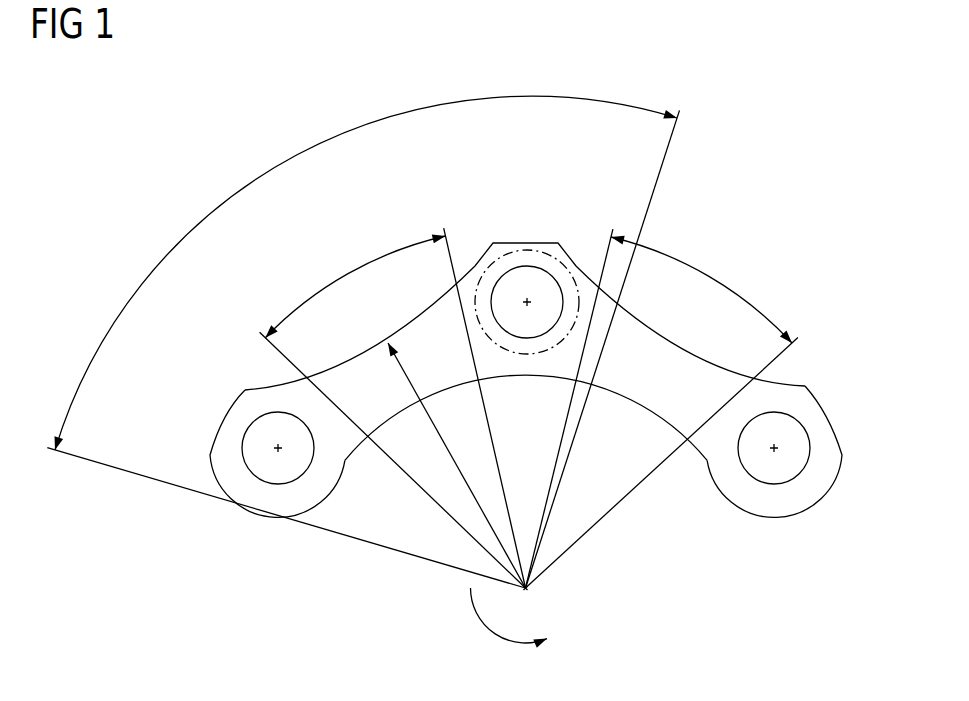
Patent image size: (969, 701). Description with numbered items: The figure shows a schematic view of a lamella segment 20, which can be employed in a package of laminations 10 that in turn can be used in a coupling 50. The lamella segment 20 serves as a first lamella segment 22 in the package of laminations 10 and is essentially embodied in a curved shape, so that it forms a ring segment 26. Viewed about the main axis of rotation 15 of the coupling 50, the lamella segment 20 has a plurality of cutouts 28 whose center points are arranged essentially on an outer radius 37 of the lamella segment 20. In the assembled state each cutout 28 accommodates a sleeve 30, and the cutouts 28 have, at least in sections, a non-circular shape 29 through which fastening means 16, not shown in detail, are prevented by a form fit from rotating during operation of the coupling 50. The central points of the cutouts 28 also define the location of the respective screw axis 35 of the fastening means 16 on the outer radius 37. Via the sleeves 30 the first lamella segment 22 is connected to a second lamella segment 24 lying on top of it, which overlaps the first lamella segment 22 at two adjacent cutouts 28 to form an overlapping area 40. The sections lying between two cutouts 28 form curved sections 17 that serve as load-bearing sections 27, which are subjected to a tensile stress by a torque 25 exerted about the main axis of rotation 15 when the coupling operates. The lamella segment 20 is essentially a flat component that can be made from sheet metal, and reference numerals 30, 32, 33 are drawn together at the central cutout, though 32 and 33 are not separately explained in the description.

The package of laminations 10 is at (465, 387).
The main axis of rotation 15 is at (527, 592).
The fastening means 16 is at (465, 376).
The curved sections 17 is at (529, 399).
The lamella segment 20 is at (363, 342).
The first lamella segment 22 is at (227, 423).
The second lamella segment 24 is at (363, 342).
The torque 25 is at (484, 624).
The ring segment 26 is at (830, 424).
The load-bearing sections 27 is at (743, 236).
The cutouts 28 is at (434, 303).
The non-circular shape 29 is at (557, 283).
The sleeve 30 is at (465, 372).
The chamfer 32 is at (494, 259).
The countersink 33 is at (494, 259).
The screw axis 35 is at (528, 302).
The outer radius 37 is at (414, 395).
The overlapping area 40 is at (248, 185).
The coupling 50 is at (552, 202).